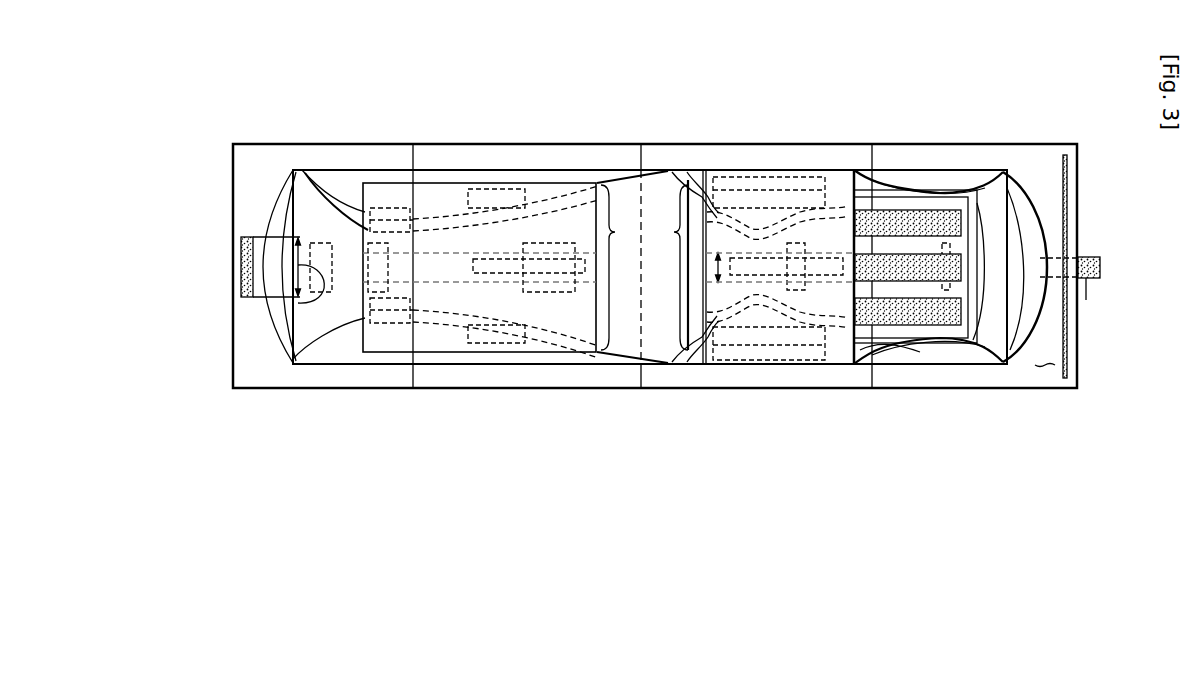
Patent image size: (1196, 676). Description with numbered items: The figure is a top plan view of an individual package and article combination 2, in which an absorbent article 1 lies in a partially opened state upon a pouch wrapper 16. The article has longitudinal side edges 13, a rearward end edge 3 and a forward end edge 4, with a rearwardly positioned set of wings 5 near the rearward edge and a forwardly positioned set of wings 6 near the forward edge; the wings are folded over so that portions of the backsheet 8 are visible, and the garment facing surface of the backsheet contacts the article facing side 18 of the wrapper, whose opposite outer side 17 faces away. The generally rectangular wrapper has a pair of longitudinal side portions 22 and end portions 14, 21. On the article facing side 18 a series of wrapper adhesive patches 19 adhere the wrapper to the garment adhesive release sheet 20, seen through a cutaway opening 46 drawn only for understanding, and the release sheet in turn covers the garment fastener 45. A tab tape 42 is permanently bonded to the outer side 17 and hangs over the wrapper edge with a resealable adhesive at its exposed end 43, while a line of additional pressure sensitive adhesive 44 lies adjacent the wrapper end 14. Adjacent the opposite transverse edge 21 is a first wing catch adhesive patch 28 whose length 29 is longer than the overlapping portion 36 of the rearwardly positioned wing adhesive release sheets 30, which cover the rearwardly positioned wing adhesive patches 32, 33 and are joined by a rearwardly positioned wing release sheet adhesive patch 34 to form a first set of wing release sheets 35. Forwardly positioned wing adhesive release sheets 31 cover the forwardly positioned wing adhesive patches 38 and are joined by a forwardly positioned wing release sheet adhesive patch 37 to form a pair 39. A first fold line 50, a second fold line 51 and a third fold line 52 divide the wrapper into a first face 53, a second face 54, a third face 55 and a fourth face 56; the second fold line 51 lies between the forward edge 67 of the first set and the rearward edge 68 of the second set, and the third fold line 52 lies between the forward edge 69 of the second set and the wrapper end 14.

The absorbent article 1 is at (1013, 220).
The individual package and article combination 2 is at (655, 448).
The rearward end edge 3 is at (278, 168).
The forward end edge 4 is at (1043, 215).
The rearwardly positioned wings 5 is at (318, 176).
The forwardly positioned wings 6 is at (703, 180).
The backsheet 8 is at (993, 355).
The longitudinal side edges 13 is at (497, 170).
The wrapper end portion 14 is at (1077, 172).
The pouch wrapper 16 is at (1028, 388).
The outer side 17 is at (1048, 378).
The article facing side 18 is at (1046, 356).
The wrapper adhesive patches 19 is at (319, 243).
The garment adhesive release sheet 20 is at (925, 350).
The wrapper end portion 21 is at (233, 166).
The longitudinal side portions 22 is at (330, 170).
The first wing catch adhesive patch 28 is at (241, 265).
The length 29 is at (298, 303).
The rearwardly positioned wing adhesive release sheet 30 is at (575, 183).
The forwardly positioned wing adhesive release sheet 31 is at (832, 225).
The rearwardly positioned wing adhesive patch 32 is at (475, 189).
The rearwardly positioned wing adhesive patch 33 is at (387, 208).
The rearwardly positioned wing release sheet adhesive patch 34 is at (575, 292).
The first set of wing release sheets 35 is at (619, 267).
The overlapping portion of release sheets 36 is at (338, 347).
The forwardly positioned wing release sheet adhesive patch 37 is at (815, 360).
The forwardly positioned wing adhesive patches 38 is at (788, 190).
The second set of wing release sheets 39 is at (670, 265).
The tab tape 42 is at (1100, 265).
The exposed end 43 is at (1086, 295).
The line of additional pressure sensitive adhesive 44 is at (1067, 340).
The garment fastener 45 is at (1003, 172).
The cutaway opening 46 is at (900, 172).
The first fold line 50 is at (413, 150).
The second fold line 51 is at (661, 150).
The third fold line 52 is at (873, 166).
The first face 53 is at (347, 388).
The second face 54 is at (497, 388).
The third face 55 is at (731, 388).
The fourth face 56 is at (955, 388).
The forward edge of first set of wing release sheets 67 is at (599, 170).
The rearward edge of second set of wing release sheets 68 is at (725, 177).
The forward edge of second set of wing release sheets 69 is at (866, 170).